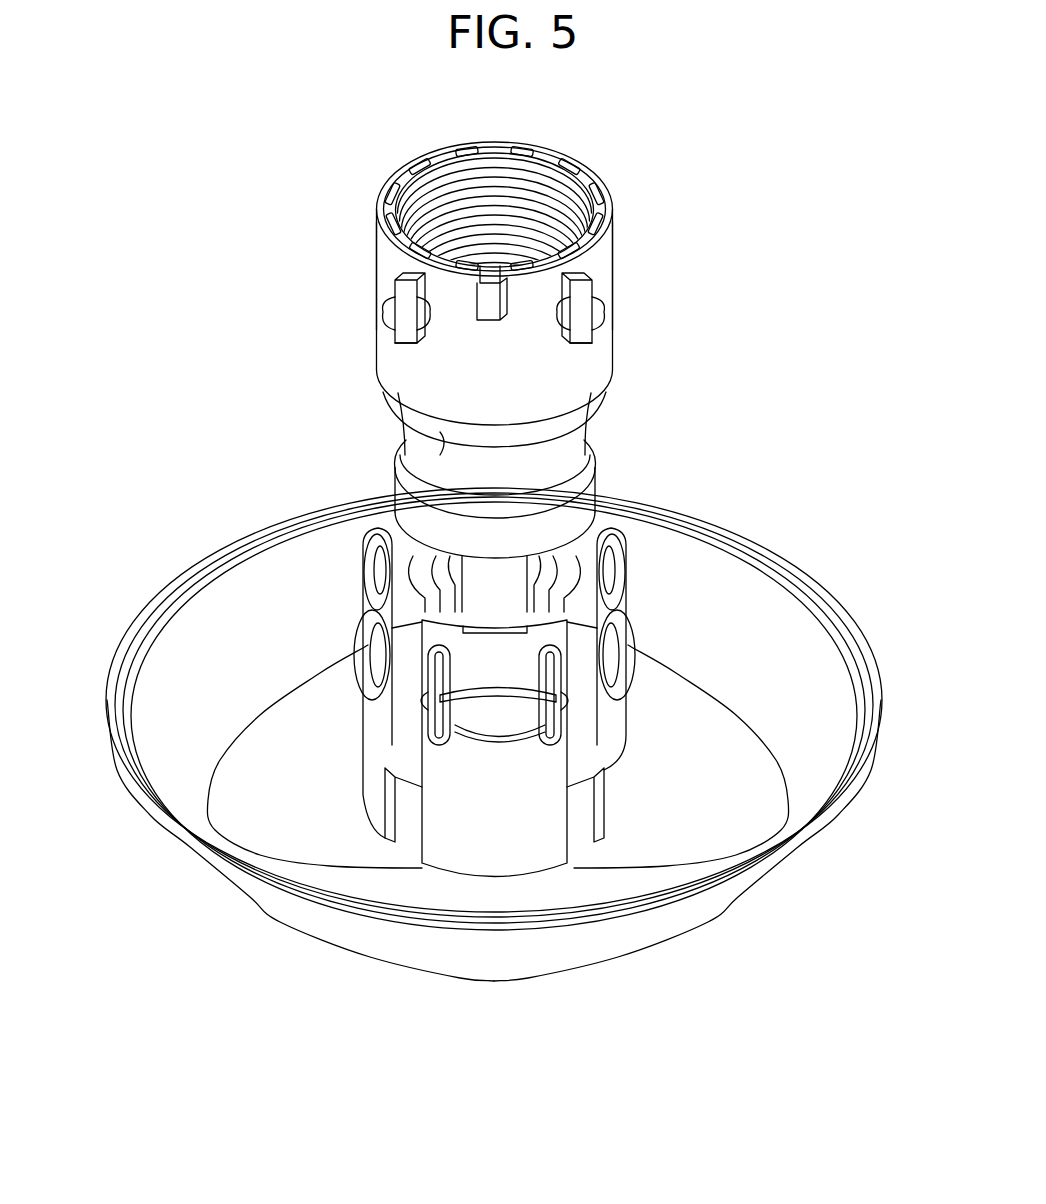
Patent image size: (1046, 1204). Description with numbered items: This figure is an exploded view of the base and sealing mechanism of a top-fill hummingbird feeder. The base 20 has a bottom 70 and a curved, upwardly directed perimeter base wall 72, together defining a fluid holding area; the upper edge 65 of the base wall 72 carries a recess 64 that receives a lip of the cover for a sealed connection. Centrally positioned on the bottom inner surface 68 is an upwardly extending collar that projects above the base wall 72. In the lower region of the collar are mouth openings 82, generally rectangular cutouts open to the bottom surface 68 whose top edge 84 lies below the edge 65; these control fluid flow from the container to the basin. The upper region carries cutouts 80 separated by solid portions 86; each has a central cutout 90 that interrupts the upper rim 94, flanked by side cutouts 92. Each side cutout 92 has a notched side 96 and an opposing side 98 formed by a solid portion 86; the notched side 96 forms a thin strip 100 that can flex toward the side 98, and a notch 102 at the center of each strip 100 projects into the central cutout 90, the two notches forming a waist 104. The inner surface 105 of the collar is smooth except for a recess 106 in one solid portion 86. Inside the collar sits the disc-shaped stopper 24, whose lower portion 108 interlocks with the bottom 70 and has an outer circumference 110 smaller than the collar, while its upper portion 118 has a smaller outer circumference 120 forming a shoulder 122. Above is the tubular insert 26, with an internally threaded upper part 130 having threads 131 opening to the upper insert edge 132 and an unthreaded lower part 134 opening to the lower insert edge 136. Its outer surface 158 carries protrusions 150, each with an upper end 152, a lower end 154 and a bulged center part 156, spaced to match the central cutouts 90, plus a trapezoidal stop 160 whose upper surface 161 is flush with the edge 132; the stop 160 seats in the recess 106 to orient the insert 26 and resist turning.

The base 20 is at (815, 552).
The stopper 24 is at (616, 408).
The tubular insert 26 is at (660, 148).
The recess 64 is at (873, 745).
The upper edge 65 is at (880, 693).
The bottom inner surface 68 is at (703, 826).
The bottom 70 is at (497, 907).
The base wall 72 is at (810, 772).
The cutouts 80 is at (612, 498).
The mouth openings 82 is at (586, 860).
The top edge 84 is at (390, 813).
The solid portions 86 is at (504, 676).
The central cutout 90 is at (392, 628).
The side cutout 92 is at (615, 655).
The upper rim 94 is at (392, 522).
The notched side 96 is at (405, 672).
The opposing side 98 is at (497, 697).
The strip 100 is at (600, 690).
The notch 102 is at (398, 540).
The waist 104 is at (365, 560).
The inner surface 105 is at (525, 590).
The recess 106 is at (497, 632).
The lower portion 108 is at (508, 552).
The outer circumference 110 is at (597, 470).
The upper portion 118 is at (538, 479).
The outer circumference 120 is at (437, 455).
The shoulder 122 is at (592, 462).
The upper part 130 is at (613, 222).
The threads 131 is at (578, 186).
The upper insert edge 132 is at (541, 147).
The lower part 134 is at (612, 386).
The lower insert edge 136 is at (446, 430).
The protrusions 150 is at (398, 268).
The upper end 152 is at (440, 262).
The lower end 154 is at (417, 346).
The bulged center part 156 is at (383, 312).
The outer surface 158 is at (539, 409).
The stop 160 is at (497, 322).
The upper surface 161 is at (494, 272).